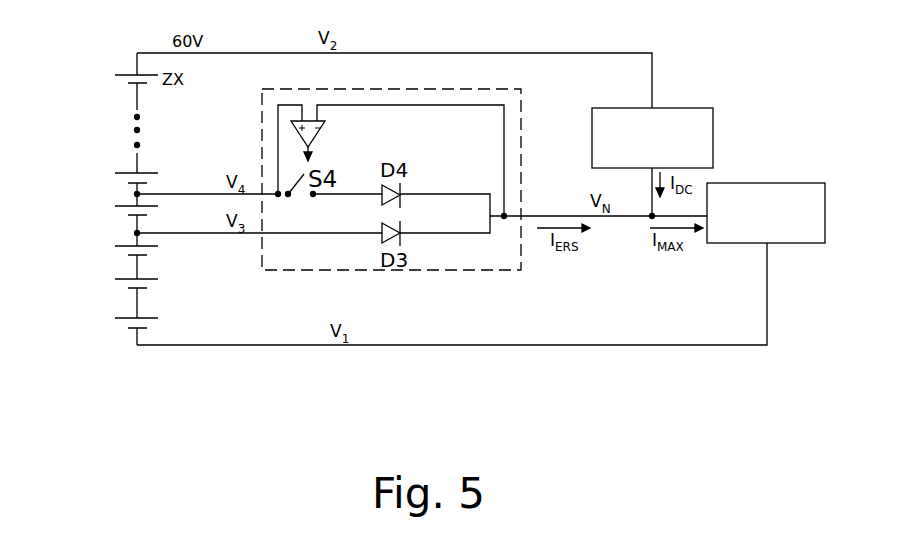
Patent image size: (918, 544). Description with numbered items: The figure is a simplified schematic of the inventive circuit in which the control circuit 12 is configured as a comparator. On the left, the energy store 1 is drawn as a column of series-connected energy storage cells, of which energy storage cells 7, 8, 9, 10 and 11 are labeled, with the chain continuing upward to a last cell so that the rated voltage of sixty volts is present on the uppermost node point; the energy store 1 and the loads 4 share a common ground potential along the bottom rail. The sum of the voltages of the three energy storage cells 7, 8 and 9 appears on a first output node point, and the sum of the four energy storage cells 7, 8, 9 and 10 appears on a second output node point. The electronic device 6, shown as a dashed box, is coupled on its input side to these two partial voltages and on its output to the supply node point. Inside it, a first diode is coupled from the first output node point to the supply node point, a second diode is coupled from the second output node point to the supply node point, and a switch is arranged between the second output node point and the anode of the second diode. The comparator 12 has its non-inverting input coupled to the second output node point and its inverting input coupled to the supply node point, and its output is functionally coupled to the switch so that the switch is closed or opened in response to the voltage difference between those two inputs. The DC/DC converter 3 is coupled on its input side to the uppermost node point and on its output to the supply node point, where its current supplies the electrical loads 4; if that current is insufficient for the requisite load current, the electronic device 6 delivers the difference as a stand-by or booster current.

The energy store 1 is at (52, 40).
The DC/DC converter 3 is at (696, 126).
The electrical loads 4 is at (813, 196).
The electronic device 6 is at (492, 273).
The energy storage cell 7 is at (152, 318).
The energy storage cell 8 is at (125, 287).
The energy storage cell 9 is at (128, 246).
The energy storage cell 10 is at (126, 201).
The energy storage cell 11 is at (151, 173).
The control circuit 12 is at (319, 140).